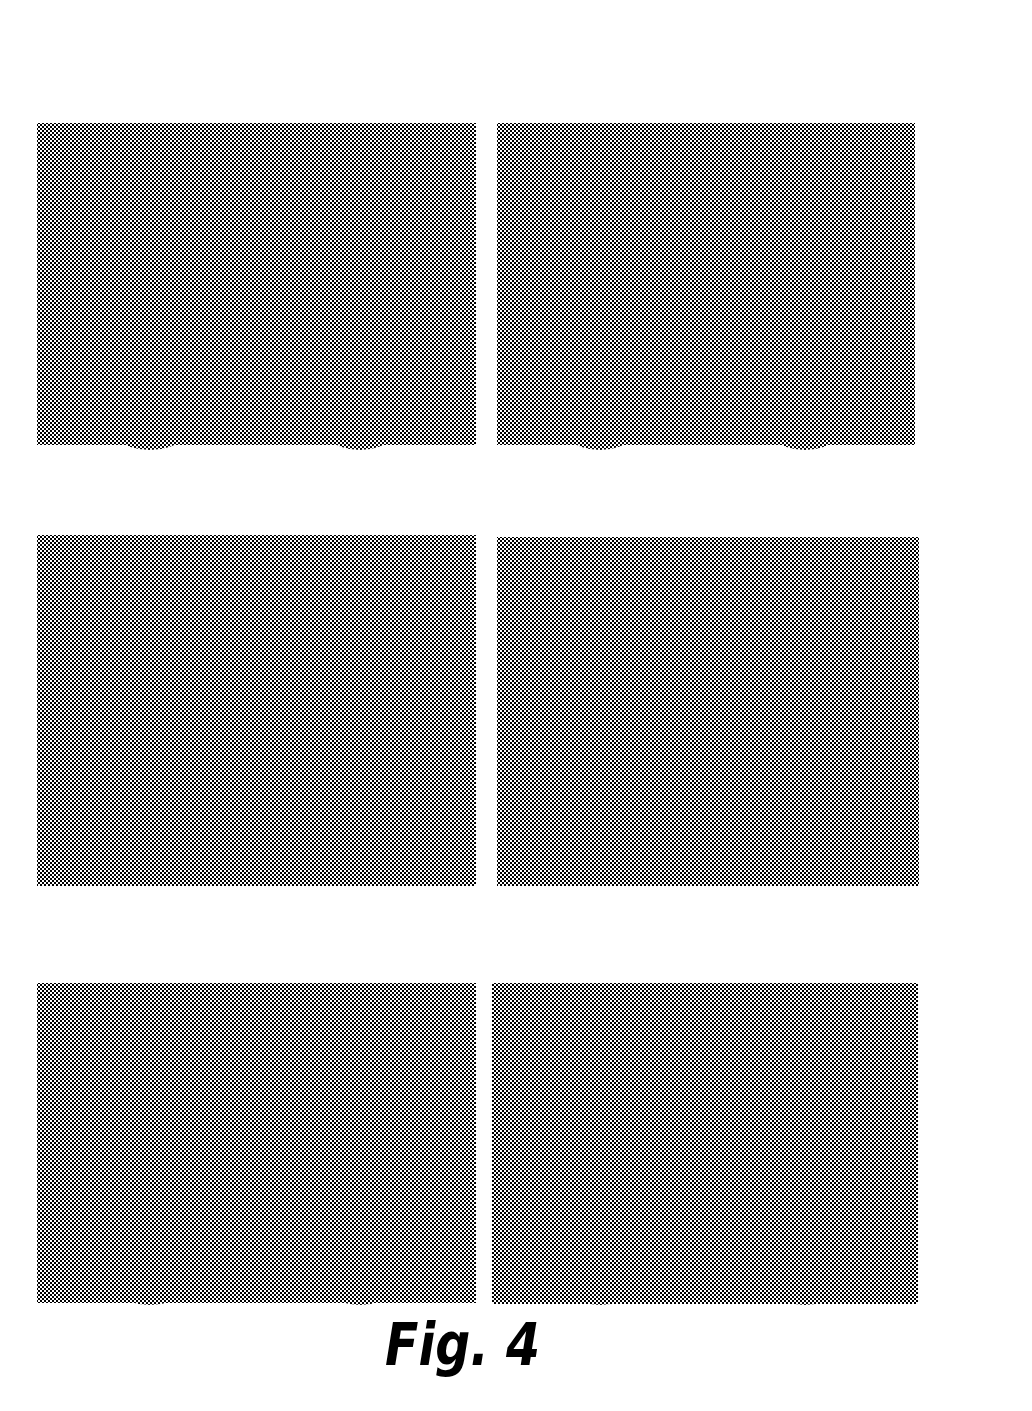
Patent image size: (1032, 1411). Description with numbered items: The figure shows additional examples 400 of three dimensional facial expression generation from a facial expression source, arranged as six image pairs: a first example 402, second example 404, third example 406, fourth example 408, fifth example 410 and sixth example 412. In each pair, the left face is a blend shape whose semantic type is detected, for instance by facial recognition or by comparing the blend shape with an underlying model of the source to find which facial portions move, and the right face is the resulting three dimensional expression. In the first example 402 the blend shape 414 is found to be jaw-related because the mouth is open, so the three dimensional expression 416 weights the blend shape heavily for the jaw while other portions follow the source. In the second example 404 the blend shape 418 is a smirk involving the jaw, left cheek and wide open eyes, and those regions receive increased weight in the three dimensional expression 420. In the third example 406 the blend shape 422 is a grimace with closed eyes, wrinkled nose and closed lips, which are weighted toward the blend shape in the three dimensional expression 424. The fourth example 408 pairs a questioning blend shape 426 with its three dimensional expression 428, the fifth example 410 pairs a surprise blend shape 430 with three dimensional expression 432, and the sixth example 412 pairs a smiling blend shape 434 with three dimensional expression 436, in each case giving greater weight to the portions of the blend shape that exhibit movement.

The additional examples 400 is at (150, 68).
The first example 402 is at (120, 86).
The second example 404 is at (118, 502).
The third example 406 is at (128, 946).
The fourth example 408 is at (572, 90).
The fifth example 410 is at (572, 500).
The sixth example 412 is at (570, 946).
The blend shape 414 is at (136, 128).
The three dimensional expression 416 is at (364, 128).
The blend shape 418 is at (136, 542).
The three dimensional expression 420 is at (364, 542).
The blend shape 422 is at (144, 988).
The three dimensional expression 424 is at (368, 988).
The blend shape 426 is at (586, 128).
The three dimensional expression 428 is at (810, 128).
The blend shape 430 is at (588, 566).
The three dimensional expression 432 is at (812, 560).
The blend shape 434 is at (590, 988).
The three dimensional expression 436 is at (810, 988).